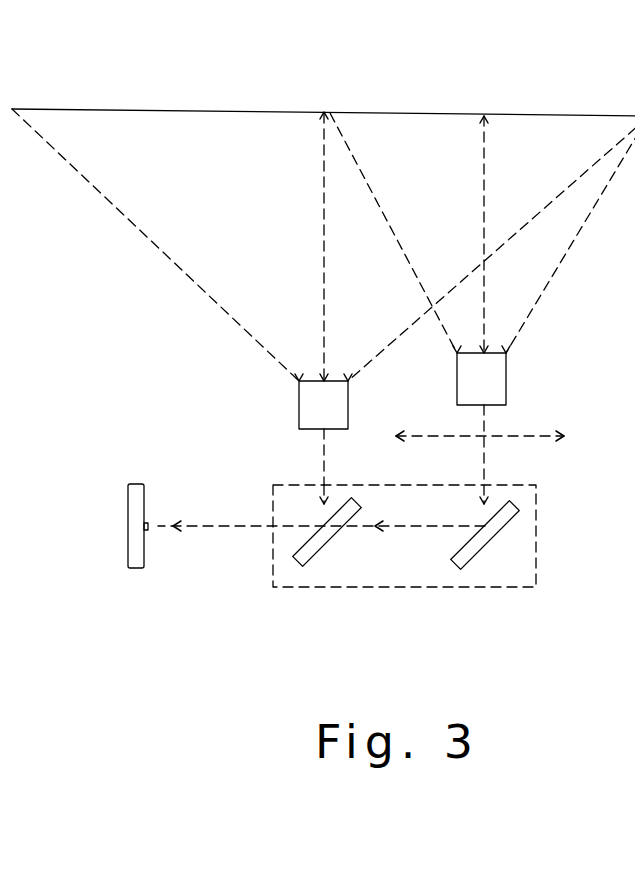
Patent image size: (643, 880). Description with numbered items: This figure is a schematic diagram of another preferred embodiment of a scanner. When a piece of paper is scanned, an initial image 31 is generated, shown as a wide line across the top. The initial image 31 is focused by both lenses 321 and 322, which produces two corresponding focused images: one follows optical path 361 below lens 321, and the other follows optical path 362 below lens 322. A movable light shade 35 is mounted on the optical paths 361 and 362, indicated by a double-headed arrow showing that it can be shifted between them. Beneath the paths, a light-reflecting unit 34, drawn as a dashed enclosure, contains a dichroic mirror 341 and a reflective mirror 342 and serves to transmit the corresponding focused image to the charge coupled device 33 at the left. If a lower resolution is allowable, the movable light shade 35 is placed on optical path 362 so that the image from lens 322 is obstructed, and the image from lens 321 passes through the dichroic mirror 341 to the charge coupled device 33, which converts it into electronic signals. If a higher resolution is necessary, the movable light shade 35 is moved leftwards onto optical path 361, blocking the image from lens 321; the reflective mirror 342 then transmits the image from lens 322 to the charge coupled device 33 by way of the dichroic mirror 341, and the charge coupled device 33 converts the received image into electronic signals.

The initial image 31 is at (397, 102).
The lens 321 is at (332, 406).
The lens 322 is at (490, 383).
The charge coupled device 33 is at (126, 503).
The light-reflecting unit 34 is at (509, 541).
The dichroic mirror 341 is at (315, 536).
The reflective mirror 342 is at (475, 531).
The movable light shade 35 is at (520, 428).
The optical path 361 is at (314, 473).
The optical path 362 is at (474, 473).